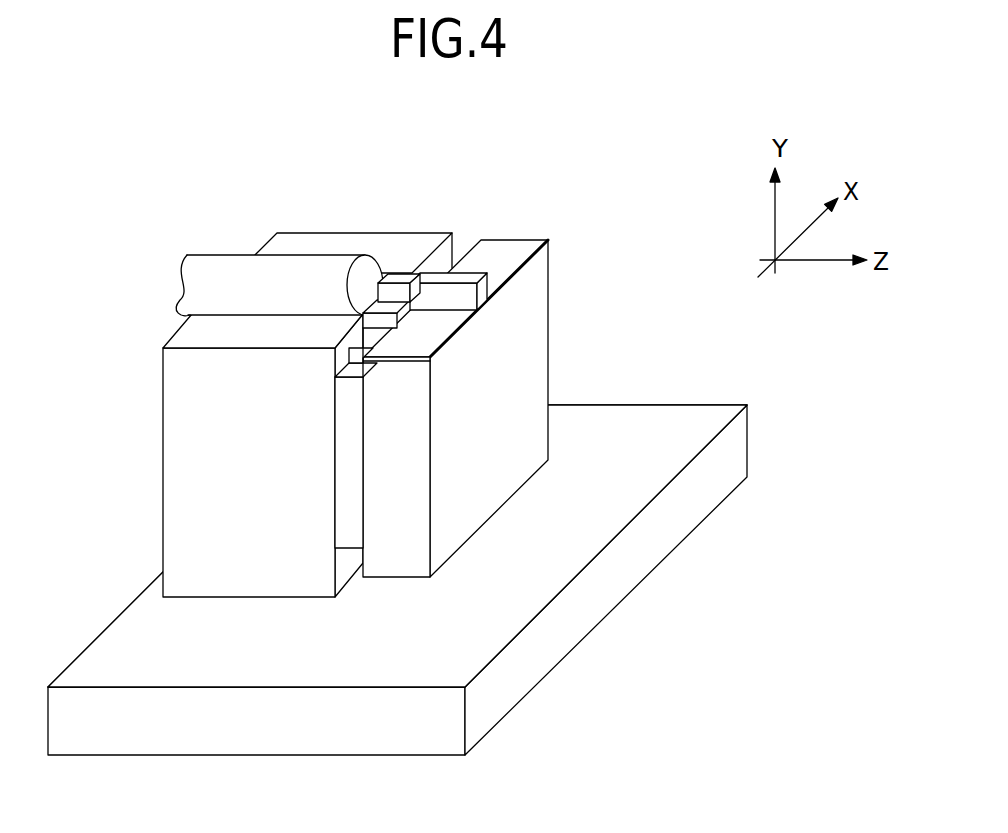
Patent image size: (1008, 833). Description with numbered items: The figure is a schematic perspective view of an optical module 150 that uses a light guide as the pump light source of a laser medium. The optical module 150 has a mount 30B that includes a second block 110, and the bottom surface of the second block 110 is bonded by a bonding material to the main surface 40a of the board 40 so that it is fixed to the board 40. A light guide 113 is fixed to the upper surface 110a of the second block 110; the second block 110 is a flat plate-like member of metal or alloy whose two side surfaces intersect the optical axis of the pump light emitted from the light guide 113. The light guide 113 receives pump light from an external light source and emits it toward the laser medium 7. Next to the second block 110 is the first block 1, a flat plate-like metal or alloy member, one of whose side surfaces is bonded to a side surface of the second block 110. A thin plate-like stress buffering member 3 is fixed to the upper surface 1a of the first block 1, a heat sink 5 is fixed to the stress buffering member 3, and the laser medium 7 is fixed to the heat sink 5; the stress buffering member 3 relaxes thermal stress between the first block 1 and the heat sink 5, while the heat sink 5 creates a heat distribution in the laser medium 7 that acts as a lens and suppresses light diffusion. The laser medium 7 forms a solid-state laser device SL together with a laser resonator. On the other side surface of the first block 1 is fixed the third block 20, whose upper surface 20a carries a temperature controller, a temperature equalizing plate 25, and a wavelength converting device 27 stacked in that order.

The optical module 150 is at (640, 152).
The board 40 is at (402, 547).
The main surface of the board 40a is at (723, 412).
The second block 110 is at (212, 455).
The upper surface of the second block 110a is at (198, 337).
The light guide 113 is at (210, 254).
The mount 30B is at (498, 500).
The third block 20 is at (444, 508).
The upper surface of the third block 20a is at (422, 356).
The temperature equalizing plate 25 is at (506, 301).
The wavelength converting device 27 is at (485, 265).
The first block 1 is at (377, 514).
The upper surface of the first block 1a is at (358, 372).
The stress buffering member 3 is at (348, 363).
The heat sink 5 is at (378, 320).
The laser medium 7 is at (396, 282).
The solid-state laser device SL is at (412, 260).